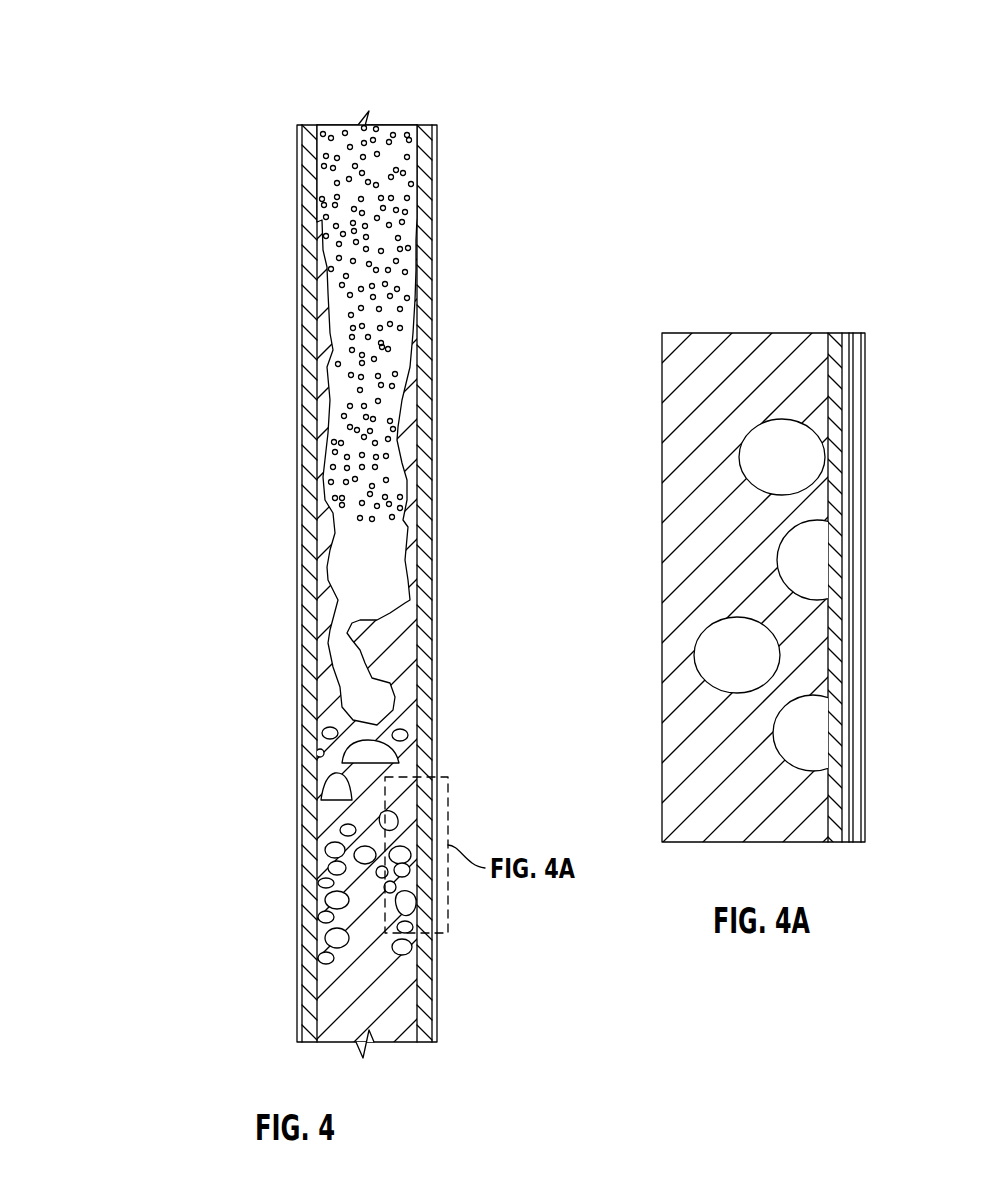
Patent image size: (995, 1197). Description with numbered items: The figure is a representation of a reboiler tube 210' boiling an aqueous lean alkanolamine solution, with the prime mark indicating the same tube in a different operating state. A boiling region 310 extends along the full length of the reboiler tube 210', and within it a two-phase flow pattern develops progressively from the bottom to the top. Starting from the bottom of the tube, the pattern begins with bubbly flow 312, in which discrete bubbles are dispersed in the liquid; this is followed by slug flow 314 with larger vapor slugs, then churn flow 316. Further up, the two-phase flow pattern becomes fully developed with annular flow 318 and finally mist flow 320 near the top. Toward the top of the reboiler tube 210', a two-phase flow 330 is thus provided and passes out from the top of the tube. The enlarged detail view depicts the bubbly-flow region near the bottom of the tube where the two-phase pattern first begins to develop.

The reboiler tube 210' is at (367, 68).
The boiling region 310 is at (148, 125).
The bubbly flow 312 is at (273, 812).
The slug flow 314 is at (273, 718).
The churn flow 316 is at (273, 567).
The annular flow 318 is at (273, 227).
The mist flow 320 is at (273, 125).
The two-phase flow 330 is at (370, 257).